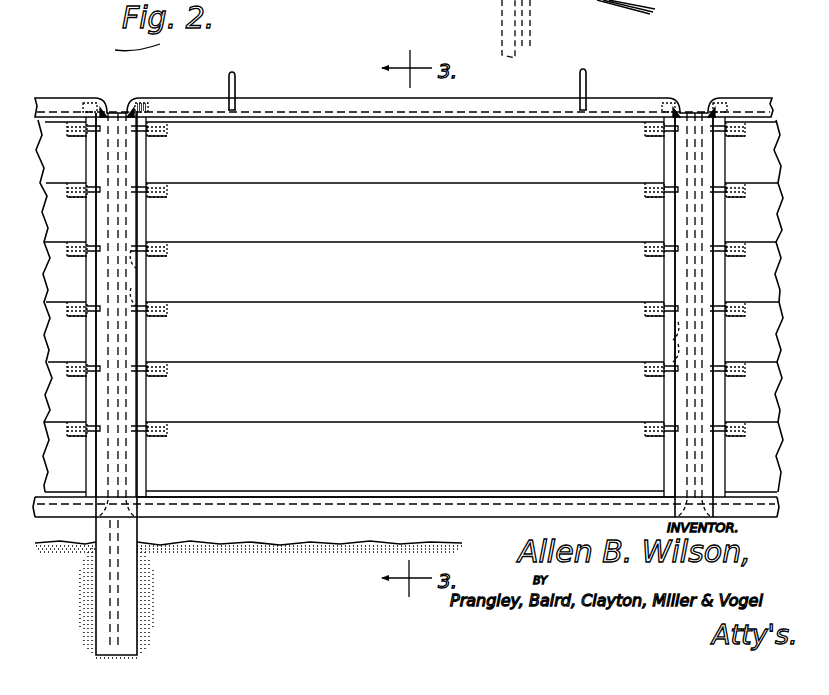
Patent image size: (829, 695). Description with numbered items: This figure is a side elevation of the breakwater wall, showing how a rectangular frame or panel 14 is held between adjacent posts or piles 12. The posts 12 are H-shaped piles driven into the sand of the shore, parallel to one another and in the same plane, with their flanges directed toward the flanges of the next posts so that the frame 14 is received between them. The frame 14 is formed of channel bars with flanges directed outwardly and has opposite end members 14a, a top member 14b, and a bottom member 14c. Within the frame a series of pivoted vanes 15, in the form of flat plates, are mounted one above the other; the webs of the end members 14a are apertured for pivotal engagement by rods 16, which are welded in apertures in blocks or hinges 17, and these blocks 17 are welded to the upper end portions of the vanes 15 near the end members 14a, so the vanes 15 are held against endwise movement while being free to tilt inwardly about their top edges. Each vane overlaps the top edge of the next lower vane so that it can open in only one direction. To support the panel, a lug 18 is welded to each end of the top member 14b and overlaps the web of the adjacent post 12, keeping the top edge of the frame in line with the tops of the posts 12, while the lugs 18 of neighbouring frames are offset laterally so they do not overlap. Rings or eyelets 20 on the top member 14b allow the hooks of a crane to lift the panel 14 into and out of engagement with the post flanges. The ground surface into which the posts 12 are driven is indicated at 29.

The posts or piles 12 is at (128, 614).
The rectangular frames or panels 14 is at (60, 97).
The end members 14a is at (146, 160).
The top member 14b is at (297, 105).
The bottom member 14c is at (302, 500).
The pivoted vanes 15 is at (452, 430).
The rods 16 is at (150, 283).
The blocks or hinges 17 is at (166, 381).
The lug 18 is at (92, 102).
The rings or eyelets 20 is at (235, 82).
The ground line 29 is at (348, 548).